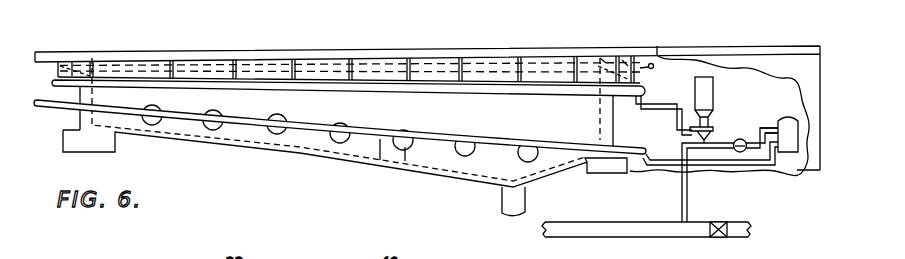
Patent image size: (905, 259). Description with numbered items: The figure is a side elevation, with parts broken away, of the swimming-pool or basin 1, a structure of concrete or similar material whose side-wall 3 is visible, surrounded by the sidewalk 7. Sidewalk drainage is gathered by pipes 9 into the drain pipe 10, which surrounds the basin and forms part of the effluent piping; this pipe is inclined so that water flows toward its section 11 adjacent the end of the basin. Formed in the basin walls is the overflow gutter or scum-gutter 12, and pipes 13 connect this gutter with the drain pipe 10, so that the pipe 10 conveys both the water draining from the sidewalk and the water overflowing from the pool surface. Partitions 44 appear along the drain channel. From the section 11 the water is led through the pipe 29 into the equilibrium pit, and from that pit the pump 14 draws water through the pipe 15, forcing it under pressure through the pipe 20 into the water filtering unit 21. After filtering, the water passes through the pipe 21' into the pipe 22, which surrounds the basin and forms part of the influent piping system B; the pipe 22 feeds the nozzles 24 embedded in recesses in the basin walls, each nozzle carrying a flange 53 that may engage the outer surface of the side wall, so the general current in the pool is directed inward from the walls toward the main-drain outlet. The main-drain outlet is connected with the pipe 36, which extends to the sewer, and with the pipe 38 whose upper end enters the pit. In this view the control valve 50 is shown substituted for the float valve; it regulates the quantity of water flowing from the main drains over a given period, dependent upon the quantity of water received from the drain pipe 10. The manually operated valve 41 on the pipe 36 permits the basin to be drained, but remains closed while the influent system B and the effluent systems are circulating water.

The swimming-pool or basin 1 is at (141, 51).
The sidewalk 7 is at (225, 53).
The partitions 44 is at (293, 50).
The pipes 9 is at (173, 60).
The drain pipe 10 is at (533, 88).
The side-wall 3 is at (312, 147).
The nozzles 24 is at (218, 133).
The influent piping system B is at (430, 140).
The pipe 22 is at (380, 160).
The flange 53 is at (405, 161).
The pipe 36 is at (520, 232).
The valve 41 is at (721, 233).
The pipe 38 is at (681, 195).
The pipe 21' is at (710, 167).
The section of pipe 11 is at (643, 88).
The overflow gutter or scum-gutter 12 is at (594, 63).
The pipes 13 is at (624, 60).
The pipe 29 is at (655, 104).
The control valve 50 is at (711, 90).
The pipe 15 is at (733, 142).
The pump 14 is at (742, 152).
The pipe 20 is at (765, 127).
The water filtering unit 21 is at (788, 125).